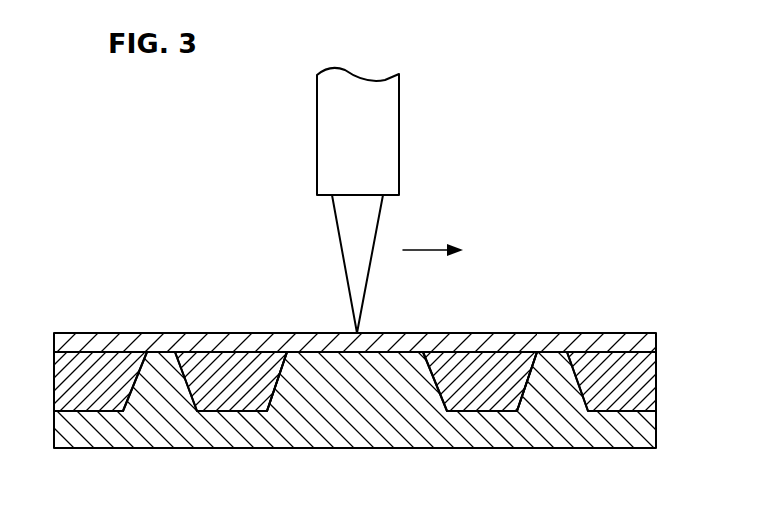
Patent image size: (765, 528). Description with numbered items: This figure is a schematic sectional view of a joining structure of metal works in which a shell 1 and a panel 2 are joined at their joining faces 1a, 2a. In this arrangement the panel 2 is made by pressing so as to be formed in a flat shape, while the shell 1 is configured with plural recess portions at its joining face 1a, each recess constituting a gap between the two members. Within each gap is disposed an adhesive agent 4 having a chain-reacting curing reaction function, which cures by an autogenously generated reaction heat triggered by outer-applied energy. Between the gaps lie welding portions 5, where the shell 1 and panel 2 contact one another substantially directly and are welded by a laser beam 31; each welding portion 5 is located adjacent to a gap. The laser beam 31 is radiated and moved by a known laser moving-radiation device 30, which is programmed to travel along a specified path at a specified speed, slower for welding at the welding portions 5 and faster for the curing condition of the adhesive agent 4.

The shell 1 is at (648, 427).
The joining face of shell 1a is at (403, 346).
The panel 2 is at (645, 333).
The joining face of panel 2a is at (377, 360).
The adhesive agent 4 is at (95, 368).
The welding portion 5 is at (158, 348).
The laser moving-radiation device 30 is at (410, 100).
The laser beam 31 is at (380, 222).